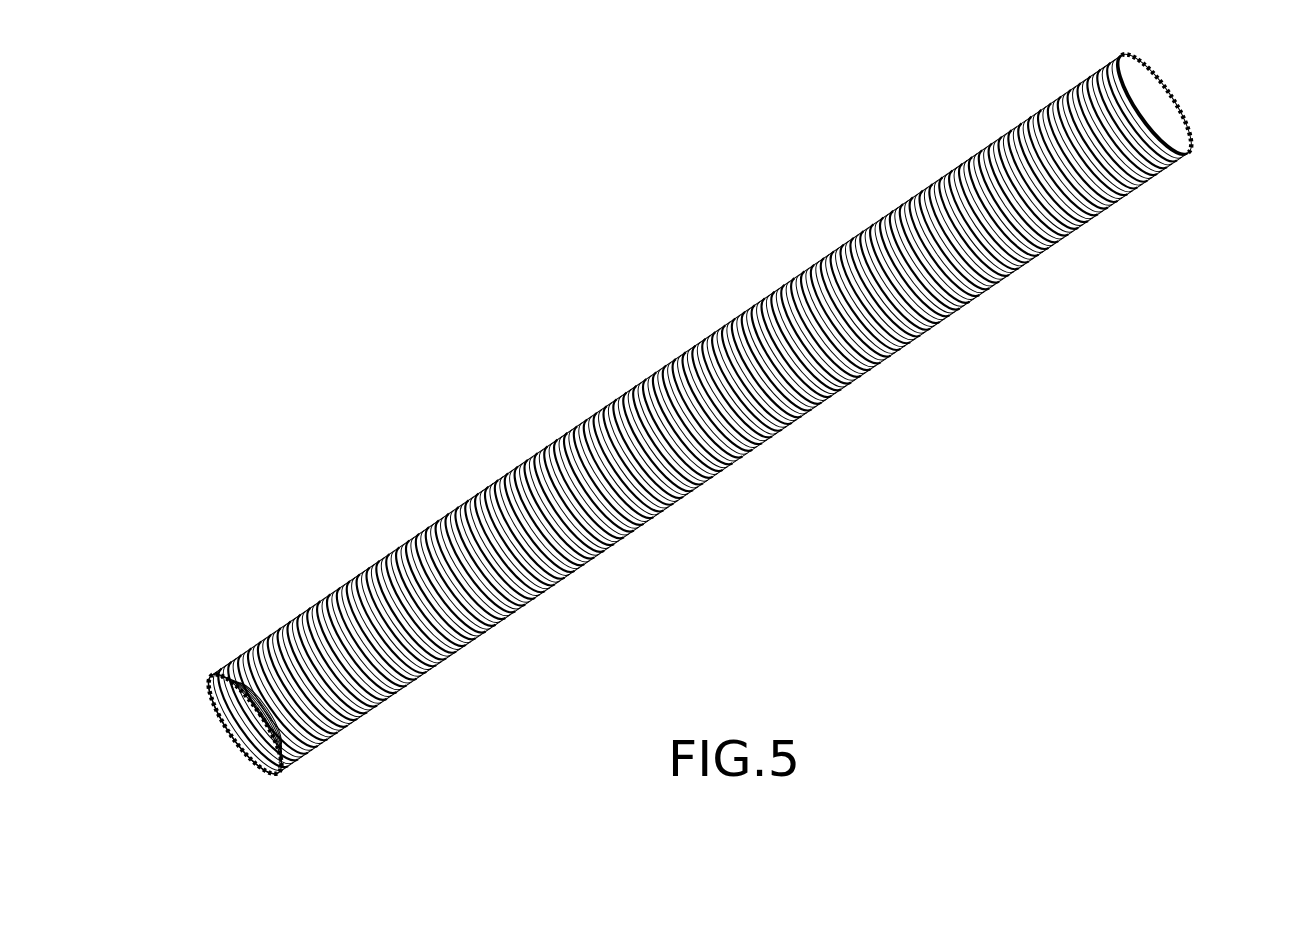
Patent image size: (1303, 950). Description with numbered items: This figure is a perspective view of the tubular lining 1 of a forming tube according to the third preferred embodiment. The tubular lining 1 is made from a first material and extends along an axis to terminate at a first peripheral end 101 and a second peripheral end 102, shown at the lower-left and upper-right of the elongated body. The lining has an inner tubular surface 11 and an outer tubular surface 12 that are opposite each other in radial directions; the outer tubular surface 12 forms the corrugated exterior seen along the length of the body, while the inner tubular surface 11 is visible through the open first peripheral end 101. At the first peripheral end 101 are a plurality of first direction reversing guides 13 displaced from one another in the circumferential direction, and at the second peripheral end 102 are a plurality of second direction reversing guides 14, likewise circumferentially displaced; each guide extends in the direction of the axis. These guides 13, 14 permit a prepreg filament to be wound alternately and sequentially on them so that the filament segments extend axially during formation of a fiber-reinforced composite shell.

The tubular lining 1 is at (506, 327).
The inner tubular surface 11 is at (233, 702).
The outer tubular surface 12 is at (788, 283).
The first direction reversing guides 13 is at (258, 753).
The second direction reversing guides 14 is at (1189, 123).
The first peripheral end 101 is at (233, 738).
The second peripheral end 102 is at (1188, 132).